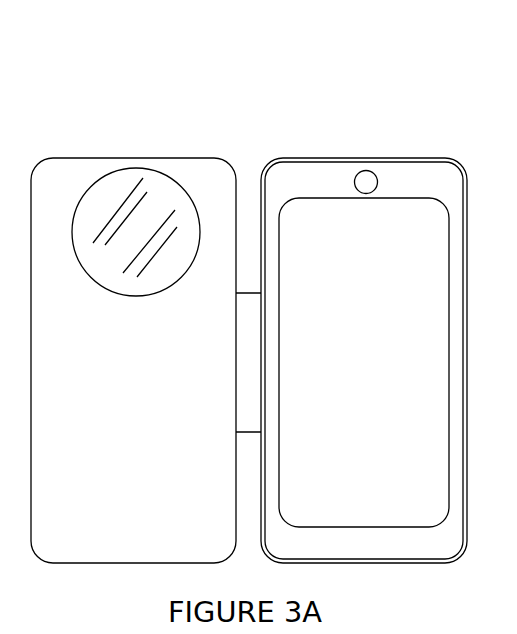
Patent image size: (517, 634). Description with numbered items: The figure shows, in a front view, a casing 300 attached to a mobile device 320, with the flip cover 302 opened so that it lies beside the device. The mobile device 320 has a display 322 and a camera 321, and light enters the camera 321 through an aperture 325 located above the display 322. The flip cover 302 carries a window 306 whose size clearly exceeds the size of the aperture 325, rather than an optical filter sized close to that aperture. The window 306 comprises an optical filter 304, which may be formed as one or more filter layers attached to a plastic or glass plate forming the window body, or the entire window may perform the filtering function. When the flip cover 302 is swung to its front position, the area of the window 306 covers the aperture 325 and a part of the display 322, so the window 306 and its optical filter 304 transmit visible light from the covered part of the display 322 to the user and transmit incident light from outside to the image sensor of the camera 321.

The casing 300 is at (153, 140).
The flip cover 302 is at (75, 172).
The optical filter 304 is at (132, 198).
The window 306 is at (115, 183).
The mobile device 320 is at (324, 173).
The camera 321 is at (366, 182).
The display 322 is at (384, 321).
The aperture 325 is at (367, 178).